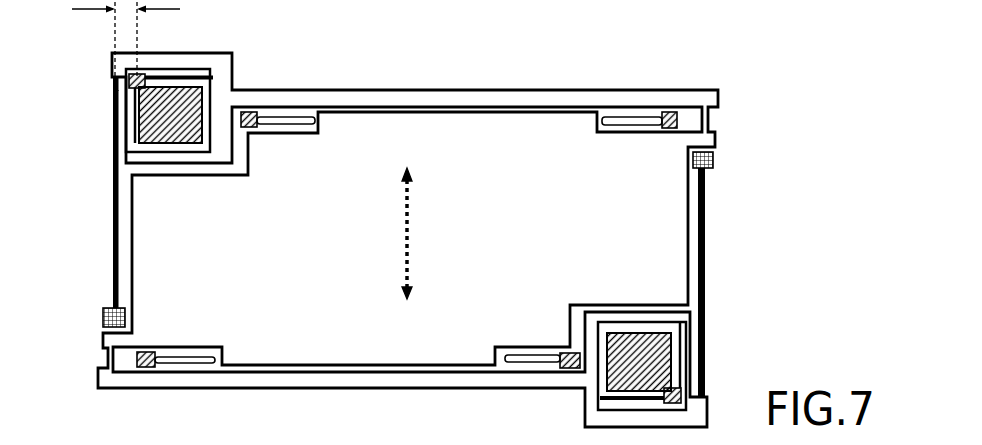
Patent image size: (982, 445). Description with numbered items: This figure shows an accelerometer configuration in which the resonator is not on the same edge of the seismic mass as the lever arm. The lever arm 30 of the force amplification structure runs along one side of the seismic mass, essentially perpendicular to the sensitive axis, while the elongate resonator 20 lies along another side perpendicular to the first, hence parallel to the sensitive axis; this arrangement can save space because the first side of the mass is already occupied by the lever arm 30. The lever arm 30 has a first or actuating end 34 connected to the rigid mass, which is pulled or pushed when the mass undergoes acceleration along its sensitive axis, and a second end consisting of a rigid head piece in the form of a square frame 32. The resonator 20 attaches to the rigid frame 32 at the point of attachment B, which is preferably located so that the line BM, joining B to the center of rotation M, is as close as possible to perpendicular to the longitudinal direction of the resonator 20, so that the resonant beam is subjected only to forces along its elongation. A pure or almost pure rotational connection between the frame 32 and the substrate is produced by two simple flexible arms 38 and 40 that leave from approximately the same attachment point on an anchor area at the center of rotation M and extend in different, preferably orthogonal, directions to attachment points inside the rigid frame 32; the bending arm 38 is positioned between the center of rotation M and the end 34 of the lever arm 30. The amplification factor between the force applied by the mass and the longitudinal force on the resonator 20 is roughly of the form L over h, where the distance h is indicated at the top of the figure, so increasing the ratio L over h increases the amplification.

The resonator 20 is at (112, 198).
The lever arm 30 is at (447, 98).
The square frame 32 is at (223, 62).
The actuating end 34 is at (697, 98).
The flexible arm 38 is at (165, 76).
The flexible arm 40 is at (134, 134).
The point of attachment B is at (112, 80).
The center of rotation M is at (130, 86).
The lever distance h is at (126, 39).